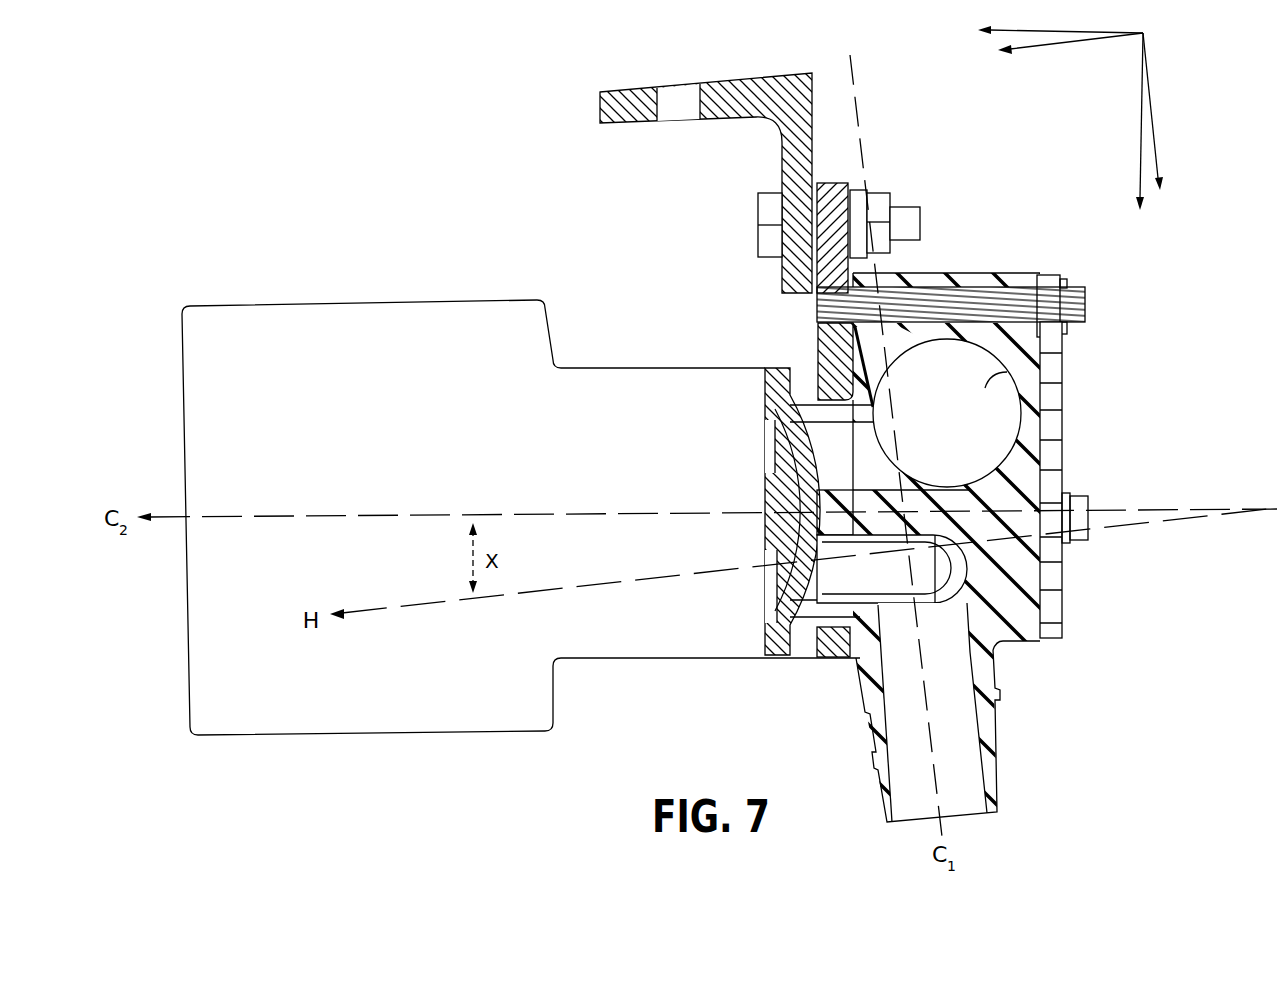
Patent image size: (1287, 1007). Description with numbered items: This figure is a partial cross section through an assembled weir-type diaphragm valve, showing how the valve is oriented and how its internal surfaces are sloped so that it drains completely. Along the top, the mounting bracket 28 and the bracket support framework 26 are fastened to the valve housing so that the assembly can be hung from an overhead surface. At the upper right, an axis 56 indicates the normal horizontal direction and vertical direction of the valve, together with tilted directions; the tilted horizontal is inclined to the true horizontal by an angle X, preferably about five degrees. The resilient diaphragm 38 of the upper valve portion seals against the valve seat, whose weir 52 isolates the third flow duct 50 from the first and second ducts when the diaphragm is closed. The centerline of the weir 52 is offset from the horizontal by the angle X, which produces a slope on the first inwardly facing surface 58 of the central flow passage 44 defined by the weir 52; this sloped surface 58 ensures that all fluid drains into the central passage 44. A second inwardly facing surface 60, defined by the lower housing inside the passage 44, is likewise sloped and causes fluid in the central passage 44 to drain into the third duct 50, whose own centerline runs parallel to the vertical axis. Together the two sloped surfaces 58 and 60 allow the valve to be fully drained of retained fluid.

The mounting bracket 28 is at (757, 95).
The bracket support framework 26 is at (830, 200).
The axis 56 is at (1150, 33).
The central flow passage 44 is at (1062, 372).
The first inwardly facing surface 58 is at (832, 488).
The weir 52 is at (855, 490).
The second inwardly facing surface 60 is at (863, 602).
The resilient diaphragm 38 is at (765, 630).
The third flow duct 50 is at (972, 793).